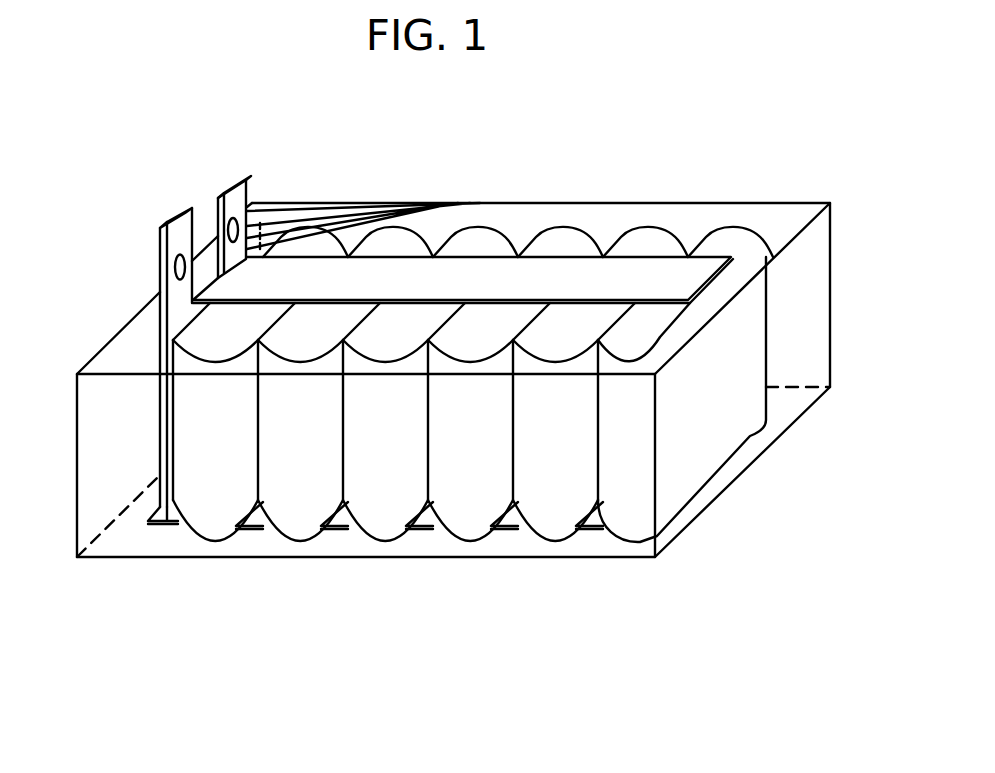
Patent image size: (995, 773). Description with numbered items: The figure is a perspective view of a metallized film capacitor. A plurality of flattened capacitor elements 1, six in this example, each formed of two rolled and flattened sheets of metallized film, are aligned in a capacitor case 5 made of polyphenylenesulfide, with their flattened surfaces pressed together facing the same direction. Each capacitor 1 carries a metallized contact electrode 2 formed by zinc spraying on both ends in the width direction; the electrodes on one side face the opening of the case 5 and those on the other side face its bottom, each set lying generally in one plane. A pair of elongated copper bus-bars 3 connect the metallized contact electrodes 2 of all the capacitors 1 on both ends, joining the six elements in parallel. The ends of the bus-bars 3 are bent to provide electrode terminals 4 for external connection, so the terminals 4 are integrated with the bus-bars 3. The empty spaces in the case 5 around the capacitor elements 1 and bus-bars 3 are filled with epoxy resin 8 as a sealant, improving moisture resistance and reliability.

The capacitor 1 is at (752, 331).
The metallized contact electrode 2 is at (743, 235).
The bus-bar 3 is at (548, 278).
The electrode terminal 4 is at (235, 200).
The capacitor case 5 is at (78, 492).
The epoxy resin 8 is at (452, 208).